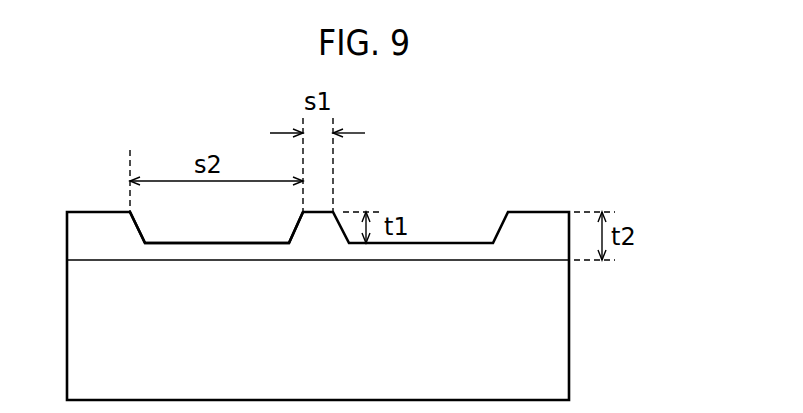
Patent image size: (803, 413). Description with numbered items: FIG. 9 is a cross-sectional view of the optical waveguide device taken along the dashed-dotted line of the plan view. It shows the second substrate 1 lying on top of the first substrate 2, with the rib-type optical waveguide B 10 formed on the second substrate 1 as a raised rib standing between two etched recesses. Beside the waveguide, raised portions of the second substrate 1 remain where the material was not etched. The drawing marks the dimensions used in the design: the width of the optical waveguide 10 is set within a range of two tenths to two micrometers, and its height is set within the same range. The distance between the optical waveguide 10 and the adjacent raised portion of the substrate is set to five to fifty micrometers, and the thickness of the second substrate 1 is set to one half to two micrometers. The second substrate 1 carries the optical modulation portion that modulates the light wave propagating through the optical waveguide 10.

The second substrate 1 is at (548, 226).
The first substrate 2 is at (528, 341).
The optical waveguide B 10 is at (297, 223).